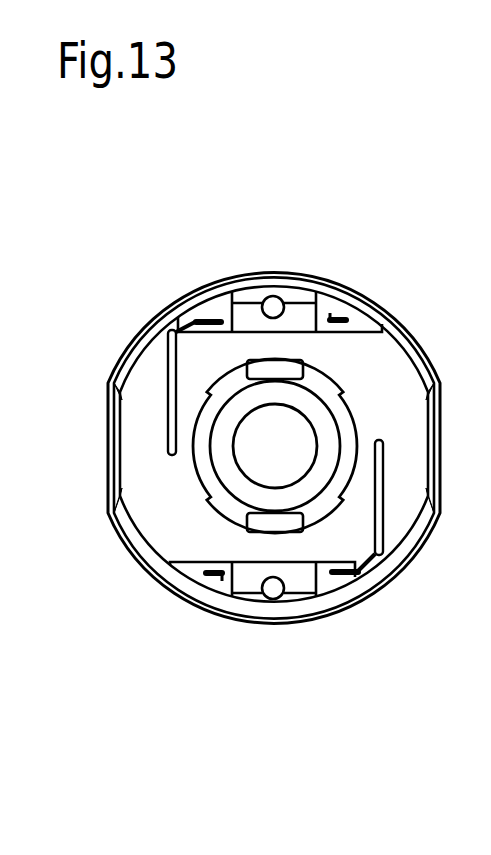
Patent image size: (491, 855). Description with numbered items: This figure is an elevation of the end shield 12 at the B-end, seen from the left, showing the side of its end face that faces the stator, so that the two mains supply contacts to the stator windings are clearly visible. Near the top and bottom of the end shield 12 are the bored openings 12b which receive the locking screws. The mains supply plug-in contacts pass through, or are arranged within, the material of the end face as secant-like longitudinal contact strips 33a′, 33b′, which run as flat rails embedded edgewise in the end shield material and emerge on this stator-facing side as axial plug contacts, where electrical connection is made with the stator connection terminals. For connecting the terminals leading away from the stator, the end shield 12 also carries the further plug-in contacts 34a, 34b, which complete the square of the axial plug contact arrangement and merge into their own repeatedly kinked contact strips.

The end shield 12 is at (423, 340).
The bored openings 12b is at (275, 296).
The longitudinal contact strip 33a′ is at (384, 484).
The longitudinal contact strip 33b′ is at (167, 393).
The further plug-in contact 34a is at (206, 580).
The further plug-in contact 34b is at (347, 318).